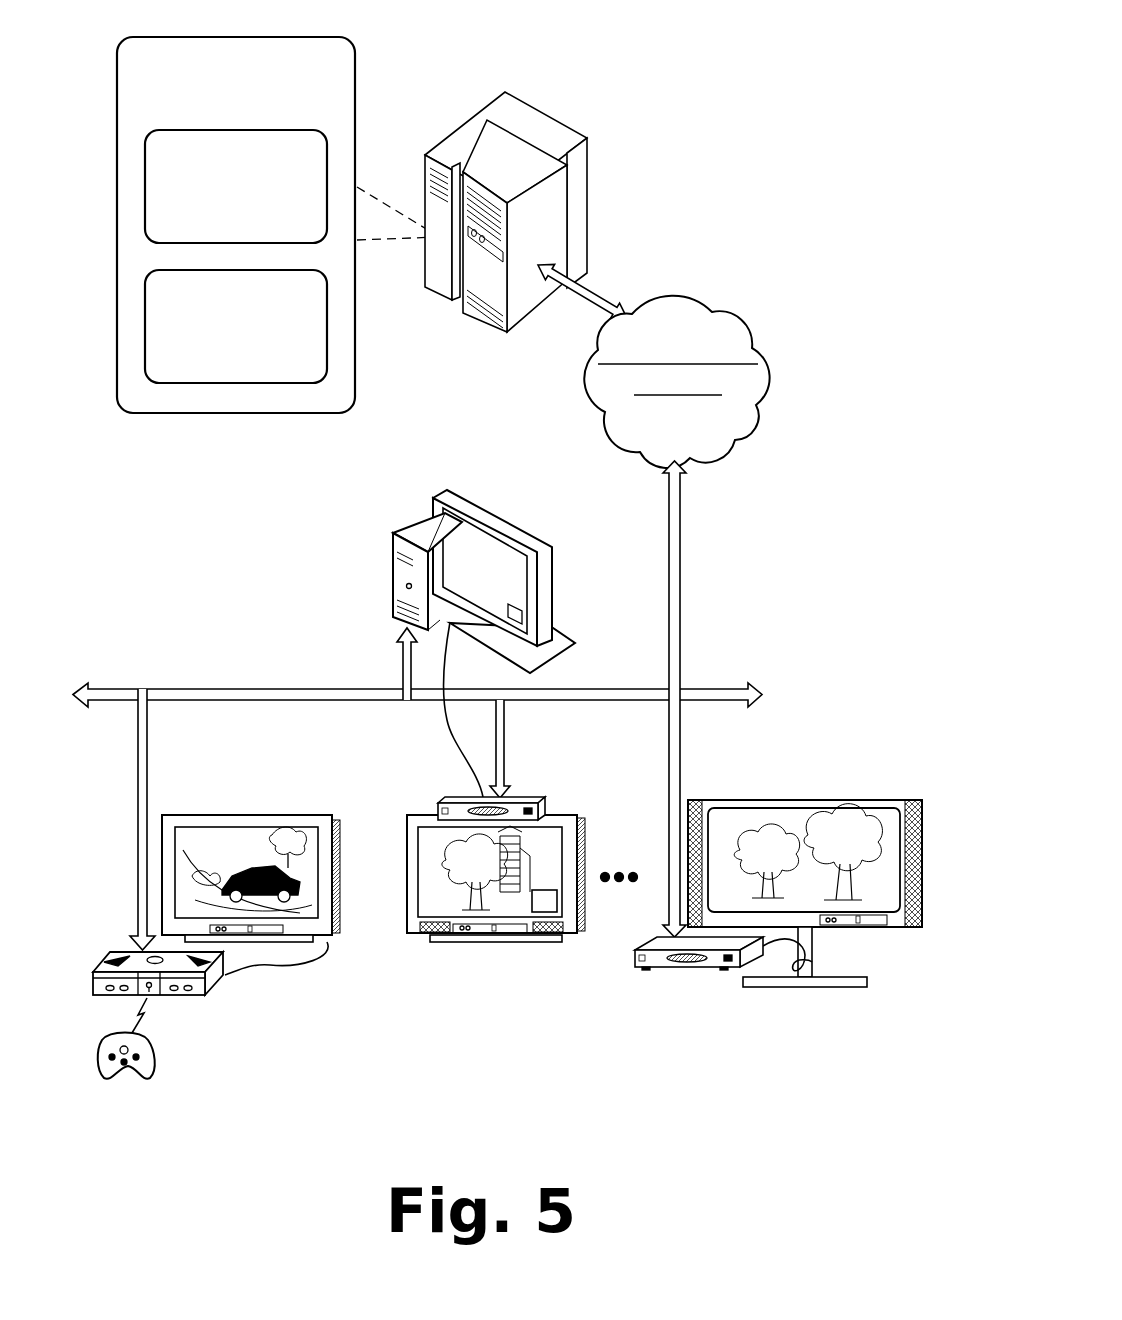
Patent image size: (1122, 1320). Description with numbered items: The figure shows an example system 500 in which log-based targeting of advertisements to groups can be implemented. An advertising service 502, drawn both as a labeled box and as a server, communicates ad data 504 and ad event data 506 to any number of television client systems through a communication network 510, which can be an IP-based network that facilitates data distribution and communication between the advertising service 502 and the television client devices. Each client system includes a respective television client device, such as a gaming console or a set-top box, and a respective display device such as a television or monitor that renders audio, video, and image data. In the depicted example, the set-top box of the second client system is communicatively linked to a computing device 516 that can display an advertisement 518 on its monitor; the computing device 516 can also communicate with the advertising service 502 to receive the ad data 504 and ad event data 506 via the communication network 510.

The system 500 is at (787, 29).
The advertising service 502 is at (216, 112).
The ad data 504 is at (217, 214).
The ad event data 506 is at (217, 364).
The communication network 510 is at (697, 432).
The computing device 516 is at (417, 533).
The advertisement 518 is at (528, 643).